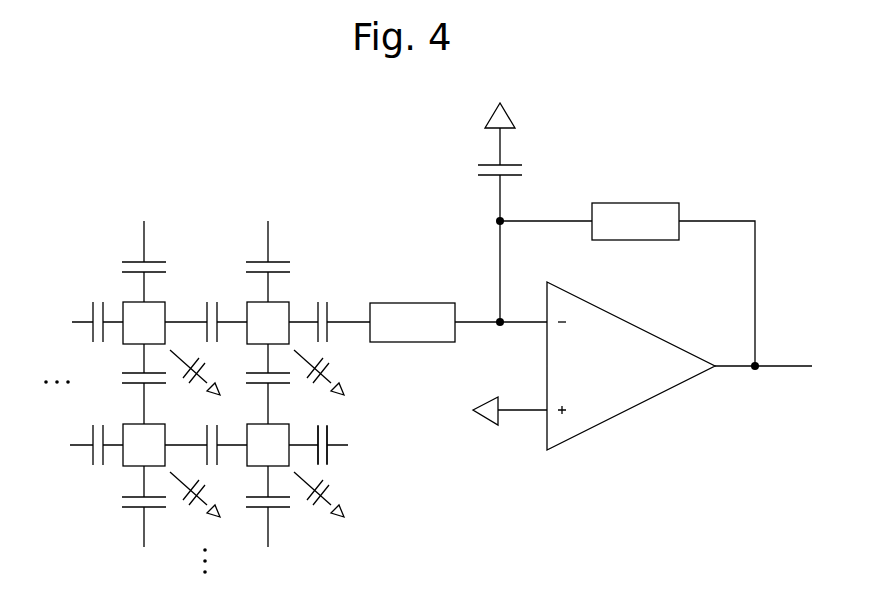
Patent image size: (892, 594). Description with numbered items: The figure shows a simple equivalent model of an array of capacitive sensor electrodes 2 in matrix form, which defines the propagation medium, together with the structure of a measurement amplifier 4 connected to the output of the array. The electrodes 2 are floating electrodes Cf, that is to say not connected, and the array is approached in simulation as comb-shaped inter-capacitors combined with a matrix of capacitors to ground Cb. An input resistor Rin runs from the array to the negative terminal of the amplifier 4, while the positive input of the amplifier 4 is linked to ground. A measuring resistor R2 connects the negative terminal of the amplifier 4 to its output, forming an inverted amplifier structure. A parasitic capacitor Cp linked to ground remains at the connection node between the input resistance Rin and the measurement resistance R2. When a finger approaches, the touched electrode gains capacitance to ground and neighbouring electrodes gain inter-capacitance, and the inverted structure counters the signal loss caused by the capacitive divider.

The capacitive sensor electrodes 2 is at (134, 303).
The measurement amplifier 4 is at (635, 333).
The floating electrodes Cf is at (323, 308).
The capacitors to ground Cb is at (340, 457).
The parasitic capacitor Cp is at (479, 171).
The input resistor Rin is at (412, 305).
The measuring resistor R2 is at (635, 204).